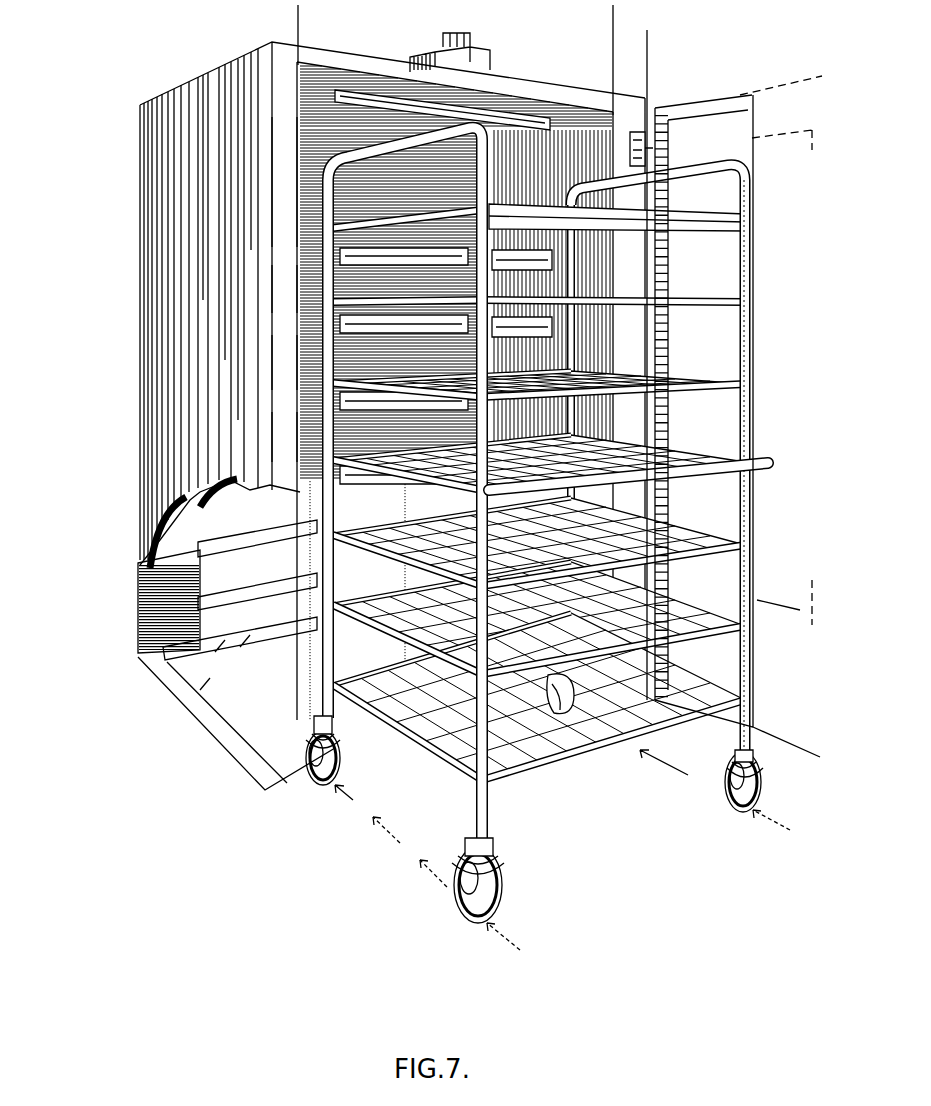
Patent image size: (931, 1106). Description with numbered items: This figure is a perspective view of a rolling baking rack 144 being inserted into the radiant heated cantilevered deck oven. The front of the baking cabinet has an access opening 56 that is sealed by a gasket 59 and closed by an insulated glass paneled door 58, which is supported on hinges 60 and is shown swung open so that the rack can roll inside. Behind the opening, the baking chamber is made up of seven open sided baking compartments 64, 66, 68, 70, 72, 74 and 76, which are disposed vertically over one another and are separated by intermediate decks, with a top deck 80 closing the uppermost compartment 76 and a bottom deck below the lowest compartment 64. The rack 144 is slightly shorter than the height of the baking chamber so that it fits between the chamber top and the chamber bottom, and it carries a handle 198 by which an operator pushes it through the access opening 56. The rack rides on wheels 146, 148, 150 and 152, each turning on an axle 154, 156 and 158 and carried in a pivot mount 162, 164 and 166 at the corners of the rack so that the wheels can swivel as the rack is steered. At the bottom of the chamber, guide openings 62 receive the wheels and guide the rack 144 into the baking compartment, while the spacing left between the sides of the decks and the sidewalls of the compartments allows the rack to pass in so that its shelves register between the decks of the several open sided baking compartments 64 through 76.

The access opening 56 is at (299, 20).
The door 58 is at (681, 106).
The gasket 59 is at (716, 117).
The hinges 60 is at (647, 355).
The guide opening 62 is at (298, 733).
The open sided baking compartment 64 is at (108, 625).
The open sided baking compartment 66 is at (108, 557).
The open sided baking compartment 68 is at (108, 482).
The open sided baking compartment 70 is at (108, 412).
The open sided baking compartment 72 is at (108, 335).
The open sided baking compartment 74 is at (108, 265).
The open sided baking compartment 76 is at (108, 117).
The top deck 80 is at (345, 98).
The rolling baking rack 144 is at (752, 428).
The wheel 146 is at (338, 770).
The wheel 148 is at (463, 912).
The wheel 150 is at (758, 812).
The wheel 152 is at (472, 800).
The axle 154 is at (330, 758).
The axle 156 is at (458, 865).
The axle 158 is at (745, 800).
The pivot mount 162 is at (315, 745).
The pivot mount 164 is at (548, 712).
The pivot mount 166 is at (733, 788).
The handle 198 is at (770, 467).